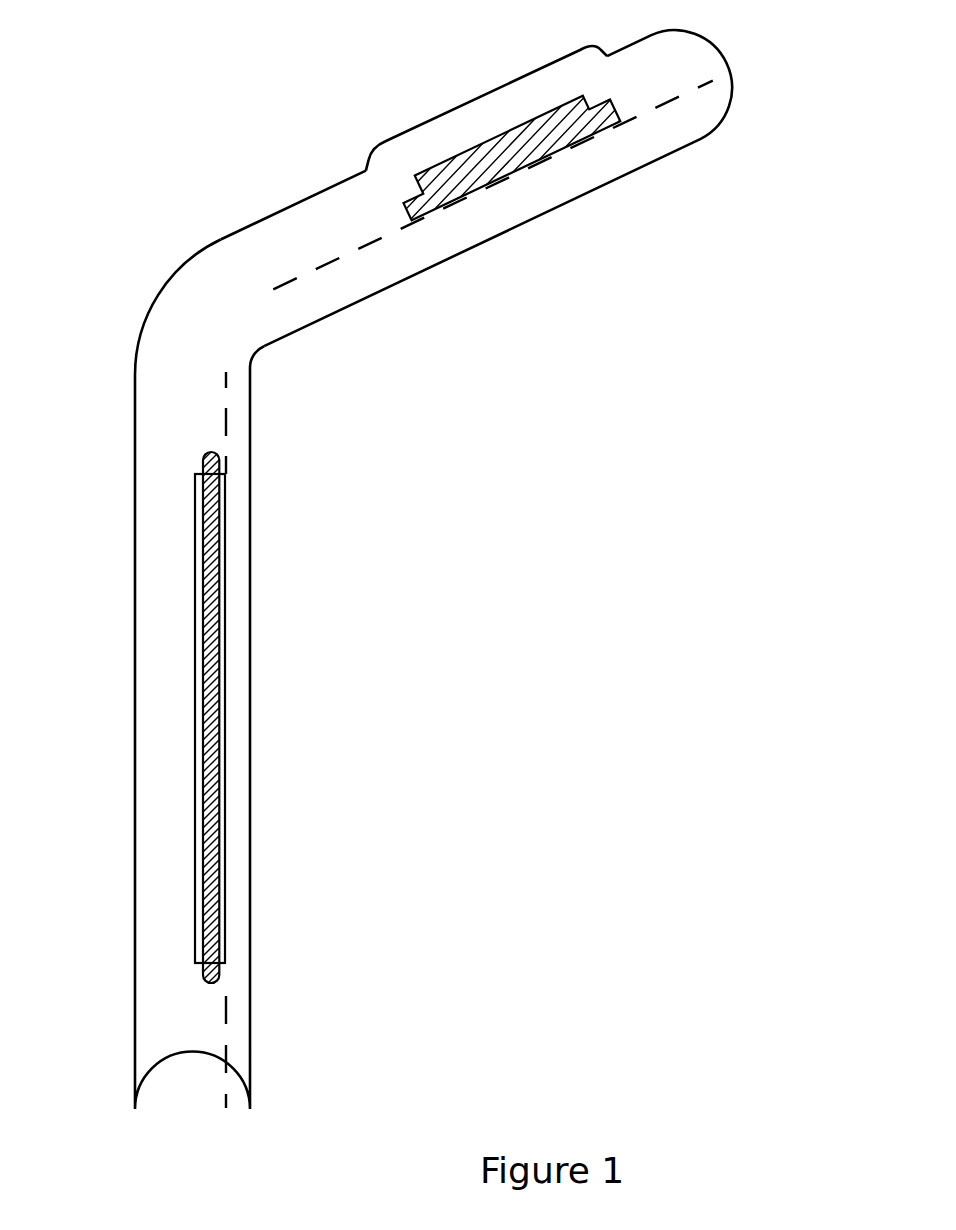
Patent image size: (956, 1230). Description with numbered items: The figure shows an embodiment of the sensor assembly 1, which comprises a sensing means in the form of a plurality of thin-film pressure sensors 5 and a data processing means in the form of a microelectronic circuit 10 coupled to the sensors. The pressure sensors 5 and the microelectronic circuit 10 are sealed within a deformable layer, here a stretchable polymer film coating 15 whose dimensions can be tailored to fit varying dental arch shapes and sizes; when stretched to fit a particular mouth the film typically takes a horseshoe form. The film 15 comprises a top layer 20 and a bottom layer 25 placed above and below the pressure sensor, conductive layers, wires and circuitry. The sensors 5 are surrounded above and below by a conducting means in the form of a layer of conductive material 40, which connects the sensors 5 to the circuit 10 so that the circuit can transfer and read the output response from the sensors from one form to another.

The sensor assembly 1 is at (610, 495).
The thin-film pressure sensors 5 is at (208, 533).
The microelectronic circuit 10 is at (548, 133).
The stretchable polymer film coating 15 is at (133, 710).
The top layer 20 is at (202, 248).
The bottom layer 25 is at (377, 292).
The layer of conductive material 40 is at (320, 260).